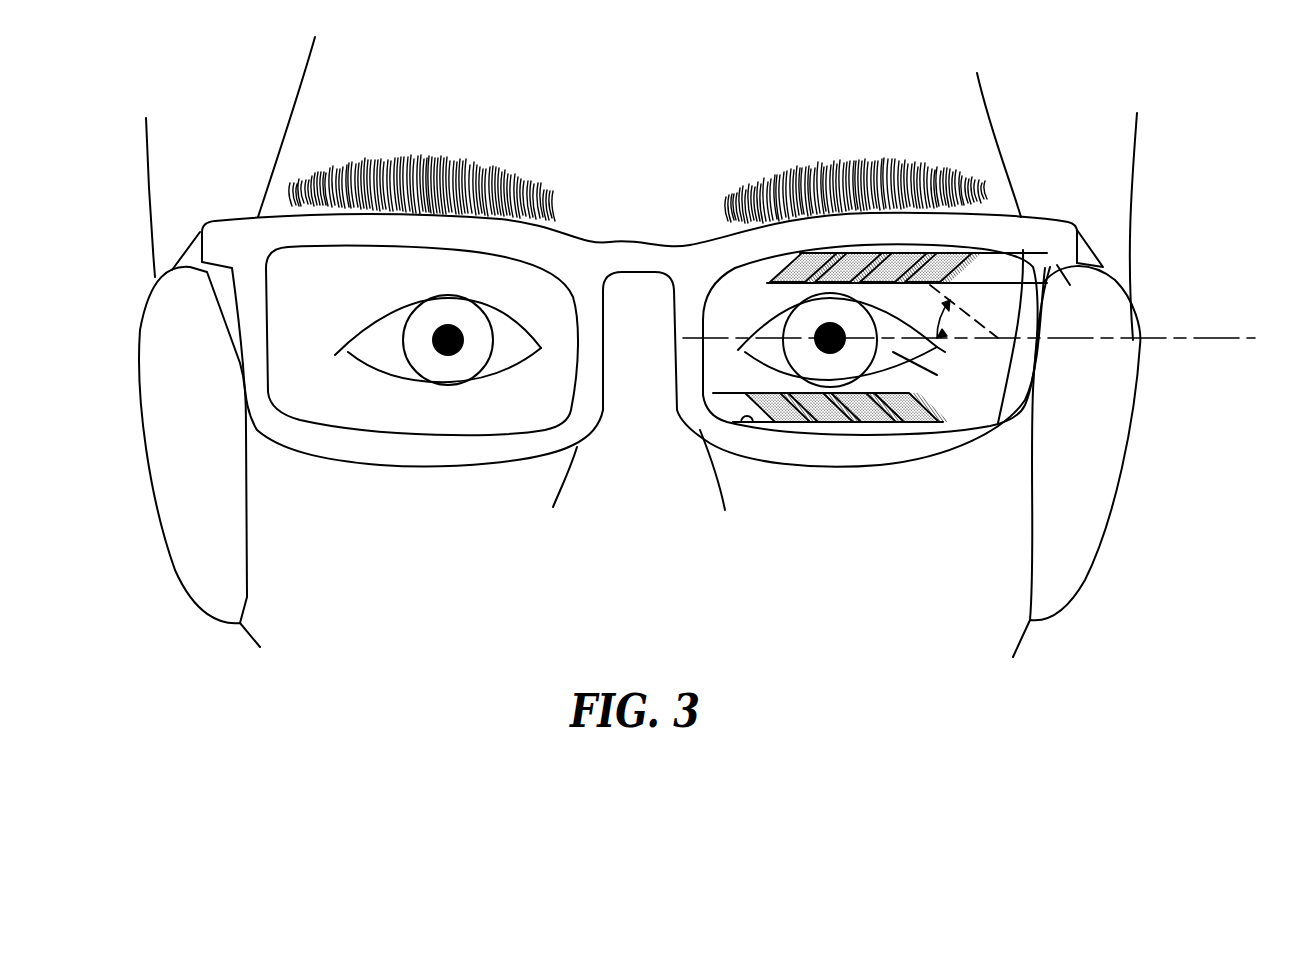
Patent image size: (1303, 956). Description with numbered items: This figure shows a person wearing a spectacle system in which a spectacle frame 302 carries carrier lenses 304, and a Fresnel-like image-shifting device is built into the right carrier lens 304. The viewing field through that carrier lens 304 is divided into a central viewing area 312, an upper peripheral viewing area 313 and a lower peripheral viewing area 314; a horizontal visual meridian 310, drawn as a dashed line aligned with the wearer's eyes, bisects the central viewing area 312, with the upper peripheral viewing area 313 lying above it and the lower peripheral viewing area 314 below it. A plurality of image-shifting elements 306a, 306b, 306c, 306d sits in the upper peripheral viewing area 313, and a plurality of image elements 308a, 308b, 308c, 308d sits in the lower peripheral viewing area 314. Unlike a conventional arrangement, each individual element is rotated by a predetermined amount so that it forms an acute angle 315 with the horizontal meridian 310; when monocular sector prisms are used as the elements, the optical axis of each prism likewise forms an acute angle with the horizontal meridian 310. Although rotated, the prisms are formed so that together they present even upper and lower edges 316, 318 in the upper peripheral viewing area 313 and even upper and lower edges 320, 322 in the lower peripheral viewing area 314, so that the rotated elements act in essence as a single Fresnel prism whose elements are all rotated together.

The spectacle frame 302 is at (703, 430).
The carrier lenses 304 is at (713, 383).
The image-shifting element 306a is at (772, 275).
The image-shifting element 306b is at (845, 253).
The image-shifting element 306c is at (896, 253).
The image-shifting element 306d is at (937, 255).
The image element 308a is at (797, 423).
The image element 308b is at (837, 423).
The image element 308c is at (873, 423).
The image element 308d is at (920, 423).
The horizontal visual meridian 310 is at (1193, 338).
The central viewing area 312 is at (897, 349).
The upper peripheral viewing area 313 is at (907, 199).
The lower peripheral viewing area 314 is at (816, 453).
The acute angle 315 is at (940, 330).
The upper edge 316 is at (1008, 280).
The lower edge 318 is at (1040, 283).
The upper edge 320 is at (727, 393).
The lower edge 322 is at (741, 422).